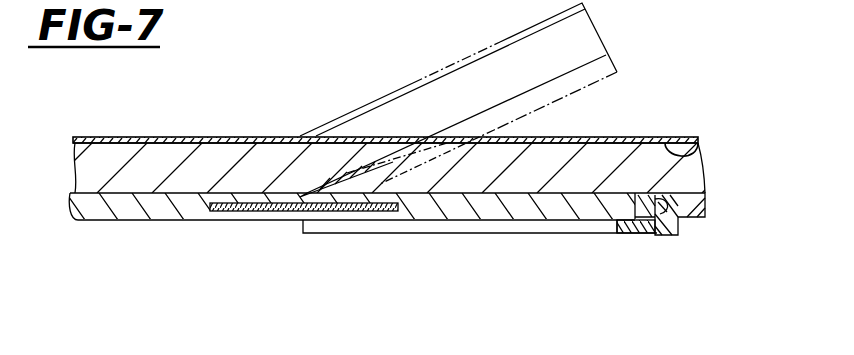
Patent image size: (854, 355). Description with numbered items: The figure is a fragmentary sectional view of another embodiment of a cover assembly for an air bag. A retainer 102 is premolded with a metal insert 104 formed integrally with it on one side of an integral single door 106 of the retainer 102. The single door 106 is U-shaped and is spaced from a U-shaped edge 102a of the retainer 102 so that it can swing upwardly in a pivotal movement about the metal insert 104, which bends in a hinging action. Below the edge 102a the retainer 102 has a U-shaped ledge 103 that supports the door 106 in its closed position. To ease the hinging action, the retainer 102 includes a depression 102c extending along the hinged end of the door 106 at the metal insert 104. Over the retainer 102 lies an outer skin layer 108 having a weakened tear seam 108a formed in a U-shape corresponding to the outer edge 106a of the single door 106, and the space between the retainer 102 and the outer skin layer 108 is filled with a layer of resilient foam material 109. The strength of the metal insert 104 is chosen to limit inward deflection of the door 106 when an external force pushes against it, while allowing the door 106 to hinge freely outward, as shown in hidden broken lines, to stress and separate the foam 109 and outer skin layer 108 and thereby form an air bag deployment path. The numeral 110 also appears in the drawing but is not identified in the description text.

The retainer 102 is at (127, 224).
The U-shaped edge 102a is at (687, 218).
The depression 102c is at (290, 197).
The U-shaped ledge 103 is at (657, 232).
The metal insert 104 is at (387, 220).
The single door 106 is at (607, 58).
The outer edge of the single door 106a is at (652, 197).
The outer skin layer 108 is at (232, 138).
The weakened tear seam 108a is at (695, 140).
The layer of resilient foam material 109 is at (162, 153).
The assembly 110 is at (305, 350).